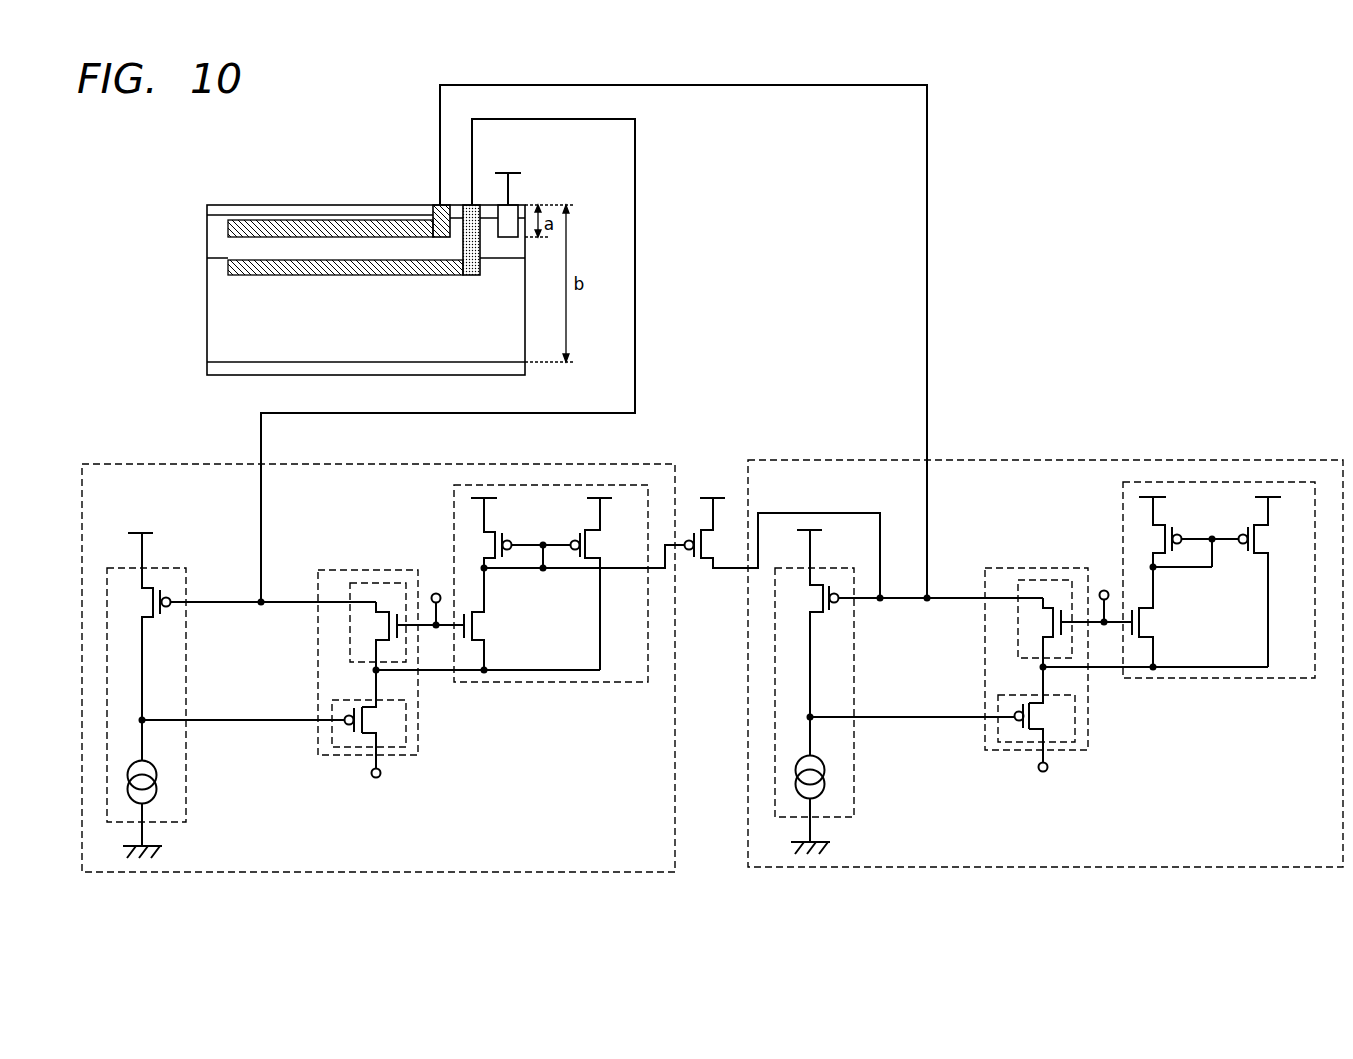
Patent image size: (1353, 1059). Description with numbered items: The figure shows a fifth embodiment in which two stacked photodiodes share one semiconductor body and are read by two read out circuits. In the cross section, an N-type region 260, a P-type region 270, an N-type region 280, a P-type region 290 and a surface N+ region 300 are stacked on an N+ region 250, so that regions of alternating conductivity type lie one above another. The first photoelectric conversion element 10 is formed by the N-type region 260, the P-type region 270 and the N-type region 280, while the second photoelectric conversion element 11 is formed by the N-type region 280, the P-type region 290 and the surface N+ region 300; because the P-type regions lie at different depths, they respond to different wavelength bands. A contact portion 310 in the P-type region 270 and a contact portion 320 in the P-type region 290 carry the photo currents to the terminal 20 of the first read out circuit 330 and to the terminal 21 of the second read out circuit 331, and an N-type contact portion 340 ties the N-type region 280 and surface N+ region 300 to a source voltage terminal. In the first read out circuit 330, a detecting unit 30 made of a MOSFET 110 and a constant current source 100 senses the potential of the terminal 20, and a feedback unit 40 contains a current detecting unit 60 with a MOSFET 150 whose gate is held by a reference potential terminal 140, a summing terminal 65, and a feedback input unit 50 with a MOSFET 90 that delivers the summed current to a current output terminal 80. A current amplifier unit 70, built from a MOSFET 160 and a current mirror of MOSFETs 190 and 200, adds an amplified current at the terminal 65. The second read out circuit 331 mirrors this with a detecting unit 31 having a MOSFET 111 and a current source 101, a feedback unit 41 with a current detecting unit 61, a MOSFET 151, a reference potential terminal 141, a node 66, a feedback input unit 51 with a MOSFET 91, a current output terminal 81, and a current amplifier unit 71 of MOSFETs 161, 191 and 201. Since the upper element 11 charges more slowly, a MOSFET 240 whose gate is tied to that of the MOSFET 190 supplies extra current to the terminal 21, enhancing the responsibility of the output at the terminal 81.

The first photoelectric conversion element 10 is at (137, 270).
The second photoelectric conversion element 11 is at (137, 200).
The terminal 20 is at (261, 605).
The terminal 21 is at (927, 603).
The detecting unit 30 is at (186, 762).
The detecting unit 31 is at (855, 757).
The feedback unit 40 is at (318, 745).
The feedback unit 41 is at (985, 744).
The feedback input unit 50 is at (332, 712).
The feedback input unit 51 is at (998, 710).
The current detecting unit 60 is at (350, 618).
The current detecting unit 61 is at (1018, 615).
The terminal 65 is at (373, 672).
The second intermediate node 66 is at (1040, 669).
The current amplifier unit 70 is at (545, 684).
The current amplifier unit 71 is at (1213, 680).
The current output terminal 80 is at (376, 778).
The current output terminal 81 is at (1043, 772).
The second MOSFET 90 is at (372, 722).
The MOSFET 91 is at (1040, 718).
The constant current source 100 is at (150, 765).
The current source 101 is at (818, 765).
The first MOSFET 110 is at (148, 602).
The MOSFET 111 is at (828, 590).
The first reference potential terminal 140 is at (436, 585).
The reference potential terminal 141 is at (1104, 582).
The third MOSFET 150 is at (378, 628).
The MOSFET 151 is at (1043, 628).
The fourth MOSFET 160 is at (478, 625).
The MOSFET 161 is at (1147, 623).
The fifth MOSFET 190 is at (484, 540).
The MOSFET 191 is at (1152, 540).
The sixth MOSFET 200 is at (590, 545).
The MOSFET 201 is at (1258, 539).
The ninth MOSFET 240 is at (700, 560).
The N+ region 250 is at (207, 369).
The N-type region 260 is at (207, 311).
The P-type region 270 is at (228, 268).
The N-type region 280 is at (207, 246).
The P-type region 290 is at (228, 229).
The surface N+ region 300 is at (207, 211).
The contact portion 310 is at (468, 205).
The contact portion 320 is at (438, 205).
The first read out circuit 330 is at (615, 463).
The second read out circuit 331 is at (1283, 458).
The N-type contact portion 340 is at (513, 208).